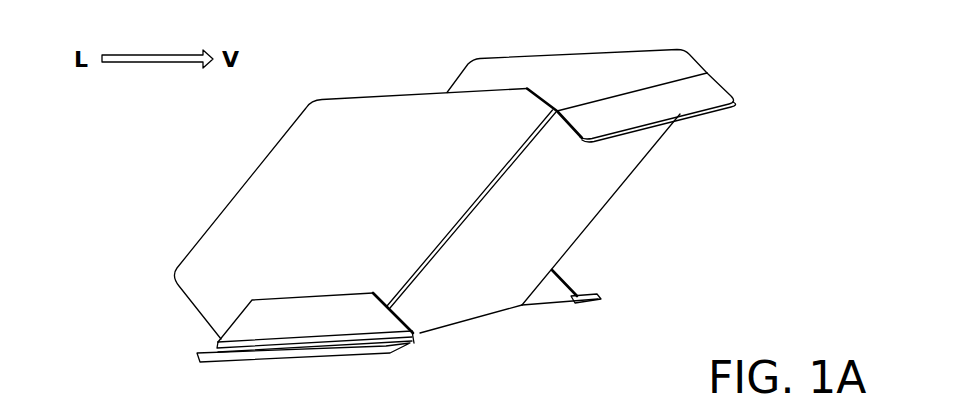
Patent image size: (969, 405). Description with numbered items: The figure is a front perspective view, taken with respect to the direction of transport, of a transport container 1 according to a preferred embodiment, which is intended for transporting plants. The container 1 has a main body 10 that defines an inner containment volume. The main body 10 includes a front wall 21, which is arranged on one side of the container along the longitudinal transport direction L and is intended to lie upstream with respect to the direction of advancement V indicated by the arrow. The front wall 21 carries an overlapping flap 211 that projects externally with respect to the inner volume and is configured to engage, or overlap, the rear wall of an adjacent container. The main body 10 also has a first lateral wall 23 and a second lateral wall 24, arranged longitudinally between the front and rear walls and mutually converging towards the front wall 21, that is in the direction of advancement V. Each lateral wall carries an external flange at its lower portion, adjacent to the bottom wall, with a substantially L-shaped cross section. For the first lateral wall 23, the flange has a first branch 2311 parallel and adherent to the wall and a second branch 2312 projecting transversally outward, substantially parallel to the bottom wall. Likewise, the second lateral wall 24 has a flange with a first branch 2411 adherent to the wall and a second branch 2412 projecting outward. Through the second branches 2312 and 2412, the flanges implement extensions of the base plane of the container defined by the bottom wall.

The transport container 1 is at (807, 155).
The main body 10 is at (168, 288).
The front wall 21 is at (600, 188).
The overlapping flap 211 is at (652, 113).
The first lateral wall 23 is at (210, 302).
The first branch 2311 is at (365, 315).
The second branch 2312 is at (393, 350).
The second lateral wall 24 is at (653, 68).
The first branch 2411 is at (550, 297).
The second branch 2412 is at (600, 300).